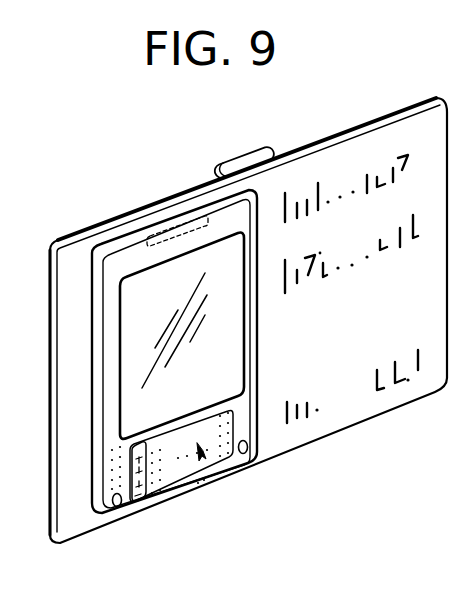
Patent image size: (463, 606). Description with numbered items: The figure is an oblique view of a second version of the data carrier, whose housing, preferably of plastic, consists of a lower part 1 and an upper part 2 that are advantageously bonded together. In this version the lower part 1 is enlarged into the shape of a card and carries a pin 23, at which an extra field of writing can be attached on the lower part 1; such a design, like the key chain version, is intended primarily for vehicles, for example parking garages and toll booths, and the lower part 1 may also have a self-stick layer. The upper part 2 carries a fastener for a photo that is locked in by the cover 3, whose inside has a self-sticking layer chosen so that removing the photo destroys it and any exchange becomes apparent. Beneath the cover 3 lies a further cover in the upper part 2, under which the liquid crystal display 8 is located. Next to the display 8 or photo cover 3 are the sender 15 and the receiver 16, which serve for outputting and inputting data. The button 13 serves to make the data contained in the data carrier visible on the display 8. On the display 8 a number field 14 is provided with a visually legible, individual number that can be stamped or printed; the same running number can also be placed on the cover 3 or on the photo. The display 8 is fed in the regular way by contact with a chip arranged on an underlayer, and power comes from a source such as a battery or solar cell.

The lower part 1 is at (333, 410).
The upper part 2 is at (97, 380).
The cover 3 is at (190, 274).
The liquid crystal display 8 is at (203, 461).
The button 13 is at (245, 454).
The number field 14 is at (138, 496).
The sender 15 is at (144, 230).
The receiver 16 is at (118, 507).
The pin 23 is at (231, 158).